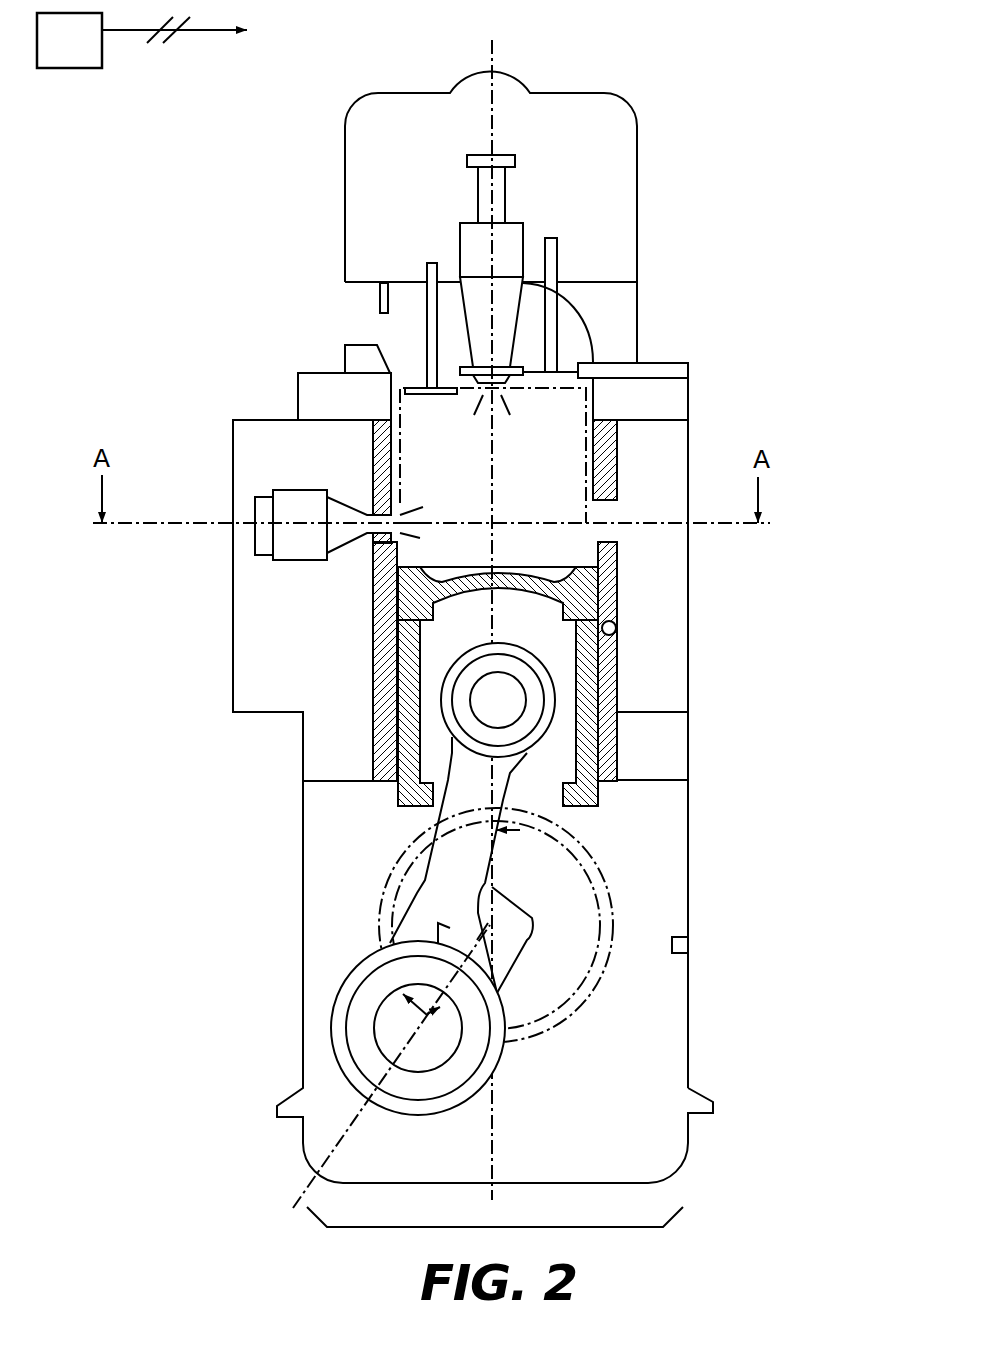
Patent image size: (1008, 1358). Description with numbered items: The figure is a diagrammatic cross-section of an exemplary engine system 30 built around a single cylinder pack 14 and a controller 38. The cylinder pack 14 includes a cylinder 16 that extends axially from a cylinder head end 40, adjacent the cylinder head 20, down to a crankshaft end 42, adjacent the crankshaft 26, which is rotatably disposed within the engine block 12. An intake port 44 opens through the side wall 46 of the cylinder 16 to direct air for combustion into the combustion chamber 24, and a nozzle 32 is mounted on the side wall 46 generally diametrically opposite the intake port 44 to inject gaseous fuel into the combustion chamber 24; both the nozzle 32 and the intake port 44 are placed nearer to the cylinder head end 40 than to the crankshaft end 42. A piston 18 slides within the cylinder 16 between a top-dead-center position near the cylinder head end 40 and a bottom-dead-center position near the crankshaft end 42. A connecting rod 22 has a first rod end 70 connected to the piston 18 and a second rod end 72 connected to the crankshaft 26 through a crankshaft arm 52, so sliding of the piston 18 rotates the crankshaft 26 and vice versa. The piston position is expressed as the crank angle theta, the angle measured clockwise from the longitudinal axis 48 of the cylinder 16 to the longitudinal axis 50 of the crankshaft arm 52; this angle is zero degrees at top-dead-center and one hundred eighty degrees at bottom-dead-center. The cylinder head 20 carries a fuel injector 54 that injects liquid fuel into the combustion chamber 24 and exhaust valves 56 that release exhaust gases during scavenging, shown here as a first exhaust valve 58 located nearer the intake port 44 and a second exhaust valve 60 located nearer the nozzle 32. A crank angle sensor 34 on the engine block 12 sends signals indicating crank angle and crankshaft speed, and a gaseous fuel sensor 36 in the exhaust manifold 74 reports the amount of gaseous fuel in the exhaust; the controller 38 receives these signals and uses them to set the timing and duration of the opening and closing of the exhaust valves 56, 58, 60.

The engine block 12 is at (322, 745).
The cylinder pack 14 is at (583, 1230).
The cylinder 16 is at (605, 485).
The piston 18 is at (583, 748).
The cylinder head 20 is at (652, 402).
The connecting rod 22 is at (457, 842).
The combustion chamber 24 is at (507, 473).
The crankshaft 26 is at (450, 1077).
The engine system 30 is at (784, 69).
The nozzle 32 is at (273, 540).
The crank angle sensor 34 is at (687, 945).
The gaseous fuel sensor 36 is at (373, 295).
The controller 38 is at (217, 36).
The cylinder head end 40 is at (387, 418).
The crankshaft end 42 is at (374, 791).
The intake port 44 is at (603, 533).
The side wall 46 is at (612, 628).
The longitudinal axis of cylinder 48 is at (500, 1133).
The longitudinal axis of crankshaft arm 50 is at (347, 1133).
The crankshaft arm 52 is at (525, 927).
The fuel injector 54 is at (510, 185).
The exhaust valve 56 is at (574, 242).
The first exhaust valve 58 is at (560, 268).
The second exhaust valve 60 is at (433, 262).
The first rod end 70 is at (456, 640).
The second rod end 72 is at (372, 1050).
The exhaust manifold 74 is at (353, 332).